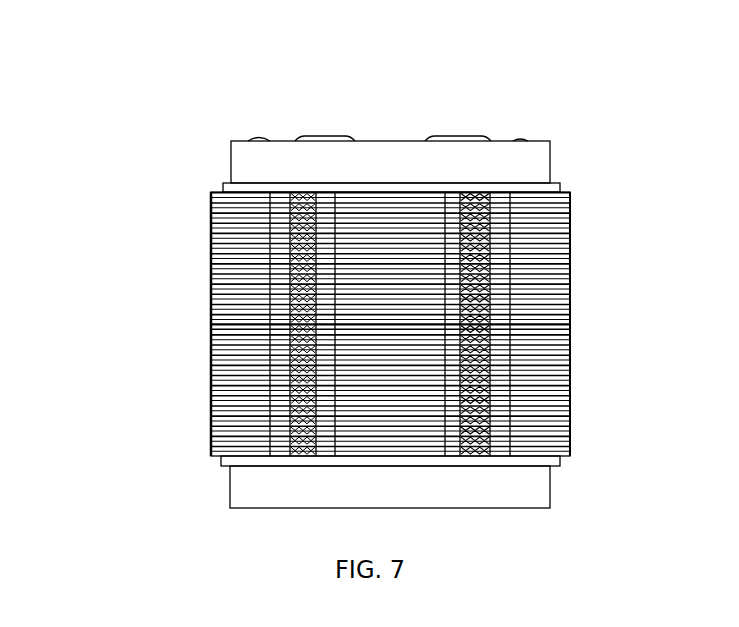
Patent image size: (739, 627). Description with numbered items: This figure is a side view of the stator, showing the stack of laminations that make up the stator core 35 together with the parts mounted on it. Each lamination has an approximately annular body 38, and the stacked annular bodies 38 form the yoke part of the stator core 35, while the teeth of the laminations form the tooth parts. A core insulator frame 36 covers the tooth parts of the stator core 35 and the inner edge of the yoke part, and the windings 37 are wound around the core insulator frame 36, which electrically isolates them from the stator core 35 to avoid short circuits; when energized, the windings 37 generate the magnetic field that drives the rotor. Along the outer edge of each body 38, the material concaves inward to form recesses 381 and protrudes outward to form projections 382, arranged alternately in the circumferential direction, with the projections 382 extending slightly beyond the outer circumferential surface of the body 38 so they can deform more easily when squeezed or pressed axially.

The stator core 35 is at (563, 200).
The core insulator frame 36 is at (487, 145).
The windings 37 is at (310, 130).
The annular body 38 is at (203, 300).
The recesses 381 is at (203, 316).
The projections 382 is at (203, 325).